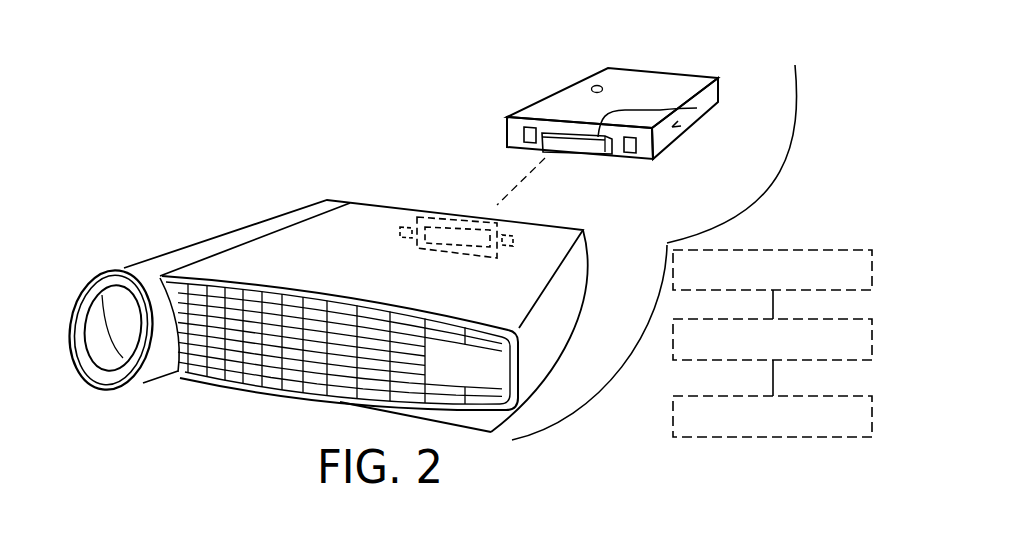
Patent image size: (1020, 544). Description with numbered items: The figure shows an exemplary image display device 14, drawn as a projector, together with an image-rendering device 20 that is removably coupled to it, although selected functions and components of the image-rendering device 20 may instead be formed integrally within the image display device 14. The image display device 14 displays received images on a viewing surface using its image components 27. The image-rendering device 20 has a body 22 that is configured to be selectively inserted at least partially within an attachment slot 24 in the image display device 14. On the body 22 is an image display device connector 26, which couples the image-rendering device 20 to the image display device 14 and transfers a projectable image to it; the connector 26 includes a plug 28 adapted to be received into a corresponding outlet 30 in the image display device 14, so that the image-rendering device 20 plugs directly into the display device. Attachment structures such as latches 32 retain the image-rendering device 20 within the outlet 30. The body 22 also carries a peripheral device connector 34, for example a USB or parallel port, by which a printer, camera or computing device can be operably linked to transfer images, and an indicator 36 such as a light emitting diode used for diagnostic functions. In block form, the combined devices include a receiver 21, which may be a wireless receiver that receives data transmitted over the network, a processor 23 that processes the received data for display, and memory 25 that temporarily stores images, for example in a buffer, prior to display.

The image display device 14 is at (272, 104).
The image components 27 is at (257, 262).
The outlet 30 is at (421, 212).
The attachment slot 24 is at (475, 217).
The latches 32 is at (398, 228).
The image-rendering device 20 is at (667, 78).
The body 22 is at (615, 75).
The indicator 36 is at (592, 87).
The image display device connector 26 is at (556, 121).
The plug 28 is at (697, 108).
The peripheral device connector 34 is at (680, 128).
The receiver 21 is at (805, 248).
The processor 23 is at (673, 347).
The memory 25 is at (823, 437).